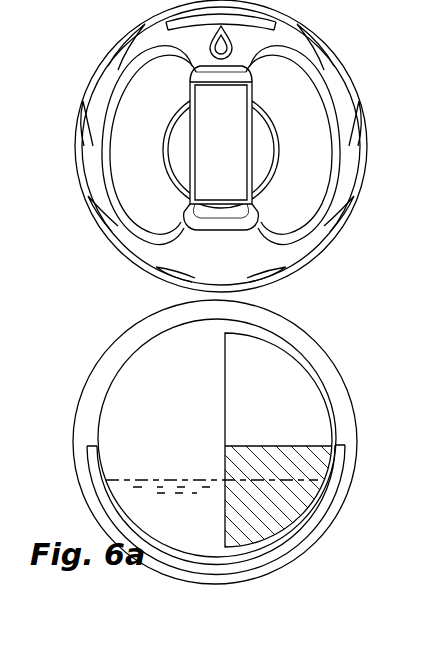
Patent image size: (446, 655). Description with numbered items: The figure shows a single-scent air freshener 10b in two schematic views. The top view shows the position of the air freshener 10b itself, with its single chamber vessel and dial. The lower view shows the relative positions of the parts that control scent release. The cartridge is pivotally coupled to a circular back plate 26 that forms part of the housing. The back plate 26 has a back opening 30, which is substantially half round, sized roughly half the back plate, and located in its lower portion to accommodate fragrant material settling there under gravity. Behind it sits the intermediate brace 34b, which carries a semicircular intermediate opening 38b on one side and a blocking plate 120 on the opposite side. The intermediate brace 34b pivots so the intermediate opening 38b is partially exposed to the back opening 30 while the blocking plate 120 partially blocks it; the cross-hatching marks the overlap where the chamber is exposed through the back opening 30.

The air freshener 10b is at (124, 38).
The back plate 26 is at (288, 321).
The intermediate brace 34b is at (130, 358).
The intermediate opening 38b is at (278, 382).
The back opening 30 is at (95, 493).
The blocking plate 120 is at (188, 409).